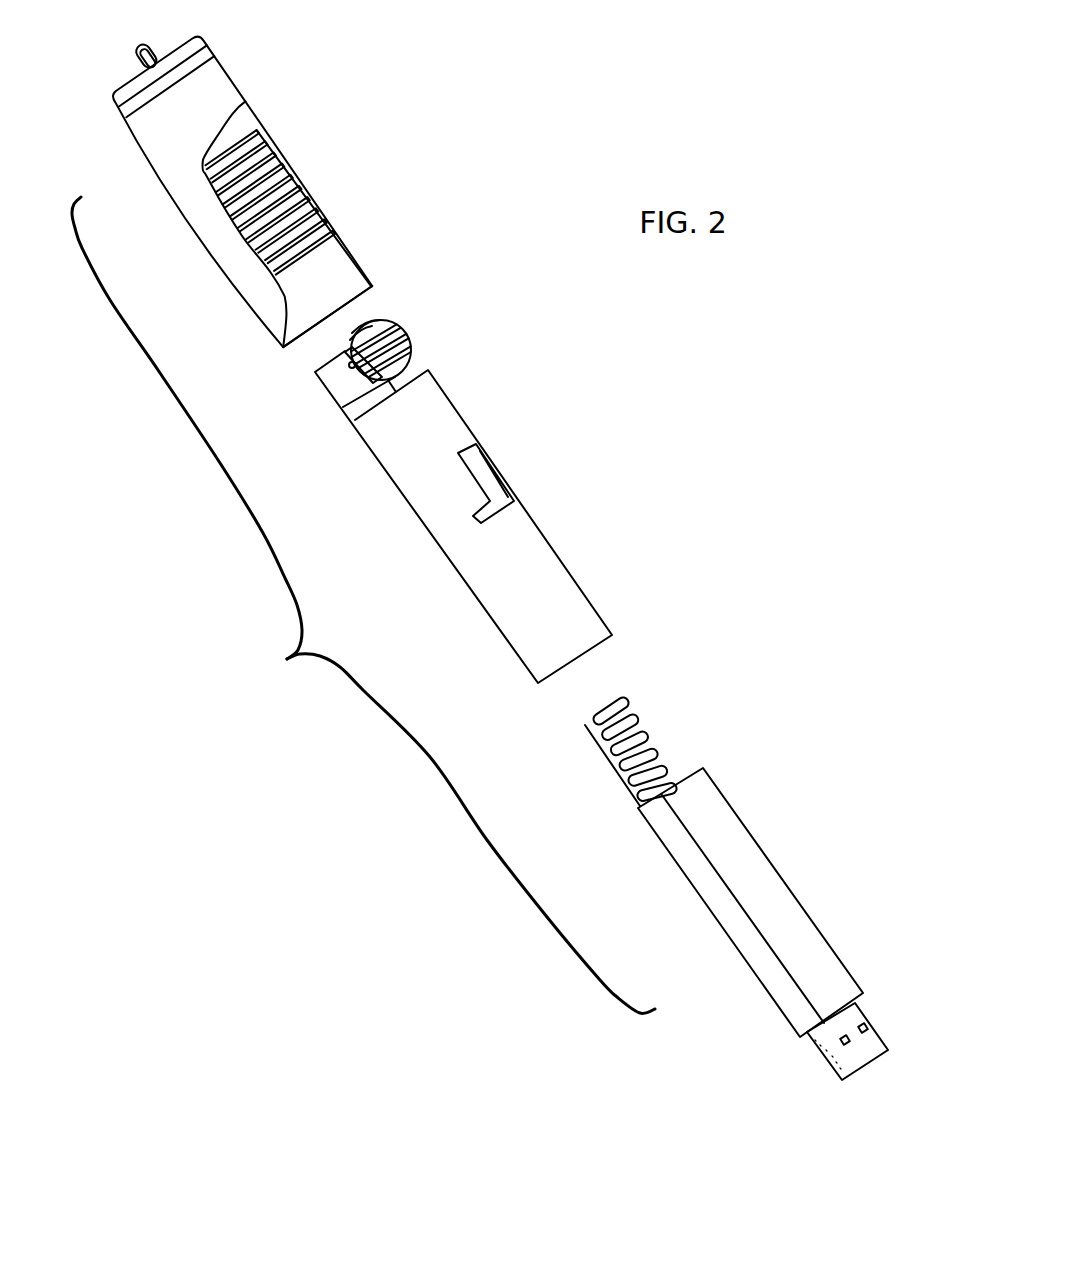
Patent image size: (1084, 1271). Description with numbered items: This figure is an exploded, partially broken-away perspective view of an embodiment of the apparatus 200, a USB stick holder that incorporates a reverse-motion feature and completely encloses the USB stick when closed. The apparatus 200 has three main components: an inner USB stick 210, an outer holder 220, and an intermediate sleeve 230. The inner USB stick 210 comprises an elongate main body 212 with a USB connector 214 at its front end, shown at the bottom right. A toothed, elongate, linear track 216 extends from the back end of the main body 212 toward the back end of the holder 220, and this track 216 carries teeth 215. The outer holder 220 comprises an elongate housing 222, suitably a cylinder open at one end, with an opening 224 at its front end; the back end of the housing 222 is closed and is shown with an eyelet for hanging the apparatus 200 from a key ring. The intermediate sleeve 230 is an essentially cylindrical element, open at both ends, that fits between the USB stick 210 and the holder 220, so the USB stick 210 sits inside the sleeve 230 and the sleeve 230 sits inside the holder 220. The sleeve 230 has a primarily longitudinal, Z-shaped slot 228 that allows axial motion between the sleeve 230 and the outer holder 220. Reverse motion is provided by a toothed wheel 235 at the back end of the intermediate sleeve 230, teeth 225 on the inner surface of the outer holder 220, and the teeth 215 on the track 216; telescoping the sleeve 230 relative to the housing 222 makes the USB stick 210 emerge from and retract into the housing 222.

The apparatus 200 is at (363, 605).
The inner USB stick 210 is at (765, 872).
The elongate main body 212 is at (769, 862).
The USB connector 214 is at (883, 1035).
The teeth 215 is at (628, 712).
The toothed elongate linear track 216 is at (666, 735).
The outer holder 220 is at (291, 182).
The elongate housing 222 is at (233, 80).
The opening 224 is at (371, 291).
The teeth 225 is at (281, 150).
The slot 228 is at (490, 488).
The intermediate sleeve 230 is at (492, 492).
The toothed wheel 235 is at (411, 353).